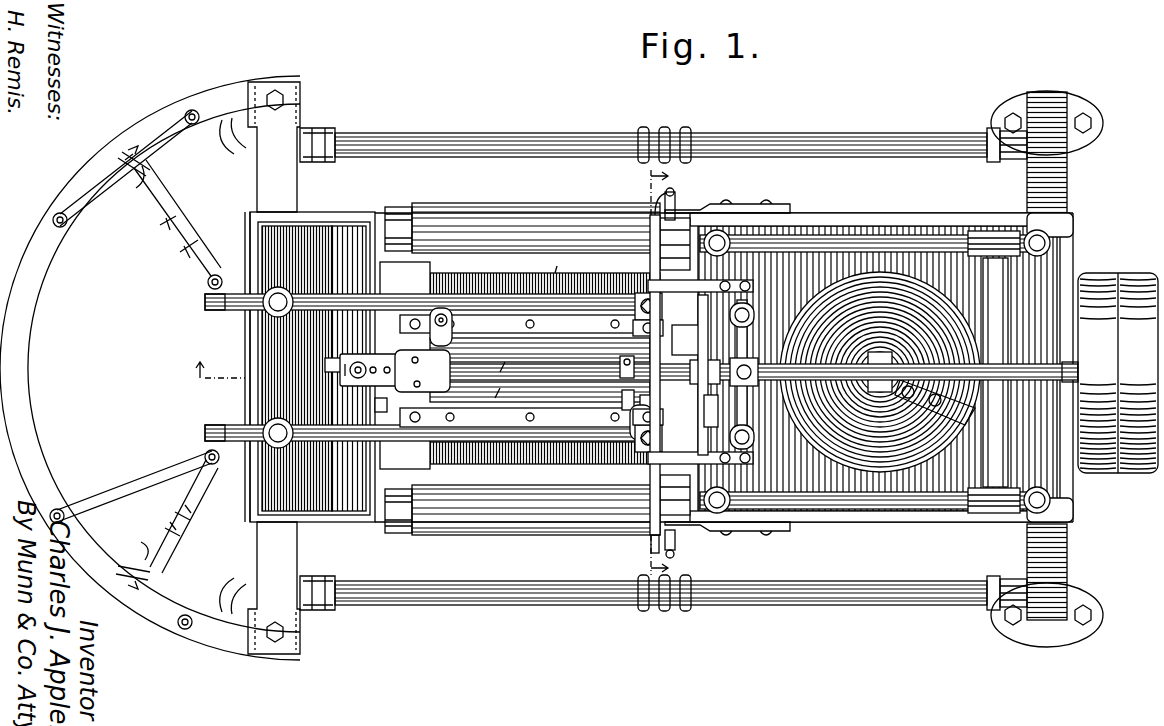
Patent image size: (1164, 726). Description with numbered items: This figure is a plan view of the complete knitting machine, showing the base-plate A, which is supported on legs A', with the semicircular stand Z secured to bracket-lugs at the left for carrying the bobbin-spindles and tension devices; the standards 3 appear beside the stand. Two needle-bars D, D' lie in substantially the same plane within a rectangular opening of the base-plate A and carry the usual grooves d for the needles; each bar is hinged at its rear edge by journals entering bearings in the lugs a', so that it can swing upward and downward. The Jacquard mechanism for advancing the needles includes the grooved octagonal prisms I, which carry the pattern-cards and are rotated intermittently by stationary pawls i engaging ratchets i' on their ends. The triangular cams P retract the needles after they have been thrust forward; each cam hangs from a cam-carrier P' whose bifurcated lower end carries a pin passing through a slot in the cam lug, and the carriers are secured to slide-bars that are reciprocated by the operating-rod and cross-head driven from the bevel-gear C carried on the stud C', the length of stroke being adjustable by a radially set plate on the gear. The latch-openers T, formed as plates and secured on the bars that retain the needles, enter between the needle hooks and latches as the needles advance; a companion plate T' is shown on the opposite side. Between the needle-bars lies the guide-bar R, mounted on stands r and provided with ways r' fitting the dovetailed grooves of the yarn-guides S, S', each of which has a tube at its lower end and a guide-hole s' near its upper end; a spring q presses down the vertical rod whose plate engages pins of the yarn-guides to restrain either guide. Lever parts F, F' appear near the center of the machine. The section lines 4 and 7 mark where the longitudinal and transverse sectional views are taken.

The semicircular stand Z is at (150, 368).
The frame standard 3 is at (272, 368).
The base-plate A is at (661, 367).
The legs A' is at (1047, 369).
The grooved octagonal prisms I is at (490, 202).
The needle-bar D is at (545, 277).
The needle-bar D' is at (545, 460).
The grooves d is at (528, 367).
The lugs a' is at (535, 366).
The cam-carrier P' is at (625, 367).
The cams P is at (657, 401).
The bevel-gear C is at (880, 372).
The stud C' is at (865, 393).
The latch-openers T is at (525, 324).
The lower guide bar T' is at (525, 417).
The guide-bar R is at (570, 370).
The ways r' is at (499, 372).
The stands r is at (330, 380).
The spring q is at (361, 371).
The yarn-guide S is at (618, 397).
The yarn-guide S' is at (452, 327).
The guide-hole s' is at (647, 420).
The stationary pawls i is at (646, 375).
The ratchets i' is at (648, 369).
The lever F is at (703, 372).
The lever arm F' is at (715, 411).
The section line 4 4 is at (212, 375).
The section line 7 7 is at (655, 372).